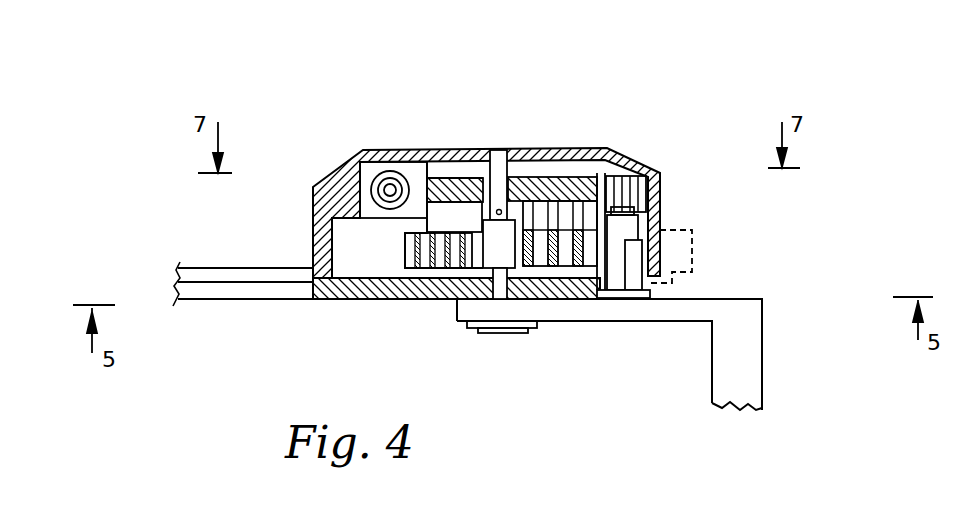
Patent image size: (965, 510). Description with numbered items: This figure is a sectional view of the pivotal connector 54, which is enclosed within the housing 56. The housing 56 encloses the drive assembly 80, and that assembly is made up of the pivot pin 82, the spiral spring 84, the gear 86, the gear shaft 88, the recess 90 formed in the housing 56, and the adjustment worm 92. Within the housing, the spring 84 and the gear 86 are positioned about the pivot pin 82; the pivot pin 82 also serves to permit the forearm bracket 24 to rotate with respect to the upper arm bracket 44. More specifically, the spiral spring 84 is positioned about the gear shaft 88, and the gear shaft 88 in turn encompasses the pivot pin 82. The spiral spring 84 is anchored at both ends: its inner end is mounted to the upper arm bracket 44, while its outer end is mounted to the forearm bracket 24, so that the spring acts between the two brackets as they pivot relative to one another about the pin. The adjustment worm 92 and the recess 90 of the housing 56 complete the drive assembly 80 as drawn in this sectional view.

The forearm bracket 24 is at (750, 337).
The upper arm bracket 44 is at (261, 303).
The pivotal connector 54 is at (528, 128).
The housing 56 is at (323, 180).
The drive assembly 80 is at (423, 92).
The pivot pin 82 is at (480, 150).
The spiral spring 84 is at (400, 270).
The gear 86 is at (562, 150).
The gear shaft 88 is at (472, 336).
The recess 90 is at (416, 150).
The adjustment worm 92 is at (380, 150).